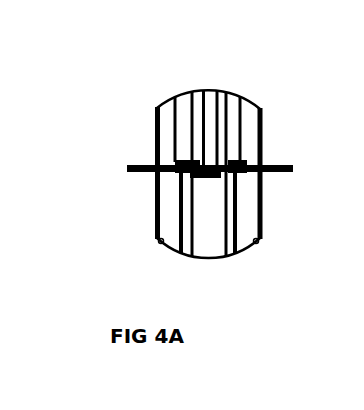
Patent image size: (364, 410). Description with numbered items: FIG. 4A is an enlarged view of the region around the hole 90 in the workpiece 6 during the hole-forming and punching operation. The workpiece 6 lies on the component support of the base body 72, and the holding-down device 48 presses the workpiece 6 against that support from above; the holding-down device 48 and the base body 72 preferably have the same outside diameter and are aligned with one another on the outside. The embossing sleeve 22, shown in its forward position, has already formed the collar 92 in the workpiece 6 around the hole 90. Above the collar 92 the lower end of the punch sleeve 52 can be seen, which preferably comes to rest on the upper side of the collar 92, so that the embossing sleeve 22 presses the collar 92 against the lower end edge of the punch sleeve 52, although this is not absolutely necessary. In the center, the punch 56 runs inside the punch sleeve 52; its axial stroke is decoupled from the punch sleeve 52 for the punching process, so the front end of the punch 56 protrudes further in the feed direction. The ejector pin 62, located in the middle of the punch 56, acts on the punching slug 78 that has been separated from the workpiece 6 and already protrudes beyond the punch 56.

The workpiece 6 is at (129, 165).
The embossing sleeve 22 is at (185, 218).
The holding-down device 48 is at (250, 137).
The punch sleeve 52 is at (240, 105).
The punch 56 is at (222, 103).
The ejector pin 62 is at (218, 99).
The base body 72 is at (170, 198).
The punching slug 78 is at (208, 176).
The hole 90 is at (222, 176).
The collar 92 is at (243, 158).